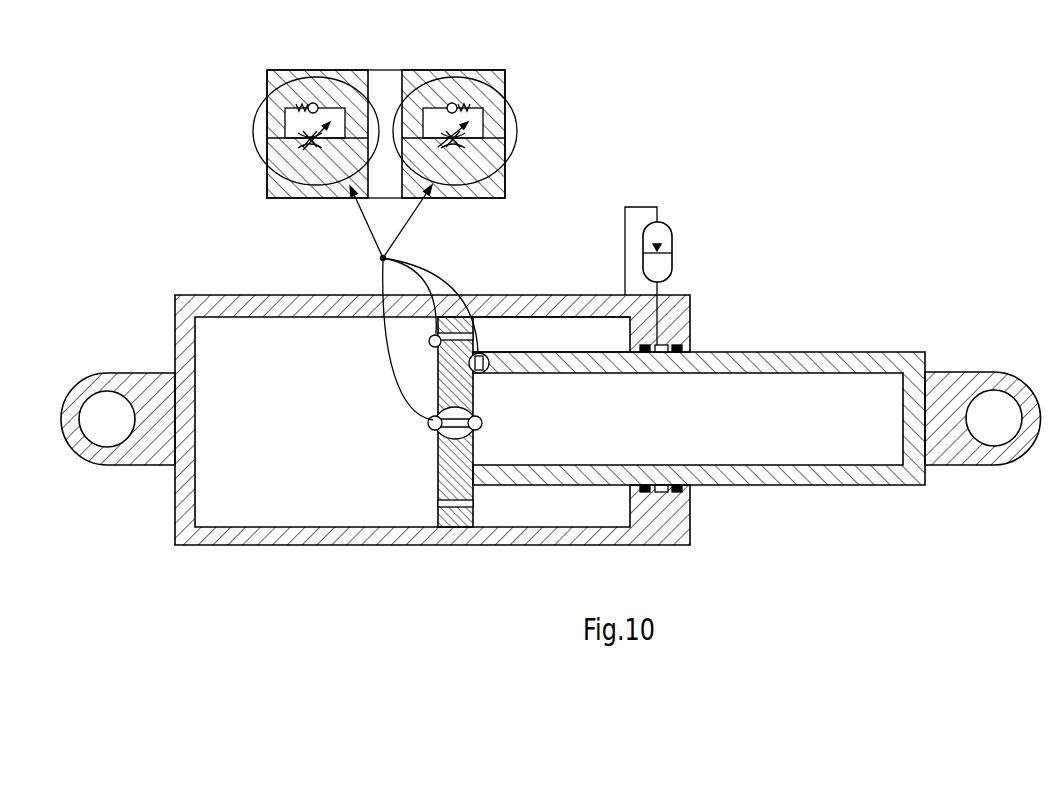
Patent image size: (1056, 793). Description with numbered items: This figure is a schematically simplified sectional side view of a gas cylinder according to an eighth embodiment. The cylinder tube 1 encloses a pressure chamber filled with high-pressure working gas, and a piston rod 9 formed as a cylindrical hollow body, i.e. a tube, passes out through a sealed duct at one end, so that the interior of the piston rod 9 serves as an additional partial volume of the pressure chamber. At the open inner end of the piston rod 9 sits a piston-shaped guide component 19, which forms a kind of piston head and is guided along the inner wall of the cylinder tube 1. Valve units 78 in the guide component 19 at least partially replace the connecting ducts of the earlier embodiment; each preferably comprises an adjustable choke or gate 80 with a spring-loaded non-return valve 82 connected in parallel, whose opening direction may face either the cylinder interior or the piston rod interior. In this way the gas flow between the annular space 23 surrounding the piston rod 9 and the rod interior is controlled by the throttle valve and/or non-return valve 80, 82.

The cylinder tube 1 is at (218, 538).
The piston rod 9 is at (782, 360).
The guide component 19 is at (450, 478).
The annular space 23 is at (537, 333).
The valve units 78 is at (407, 72).
The adjustable choke or gate 80 is at (297, 178).
The spring-loaded non-return valve 82 is at (302, 104).